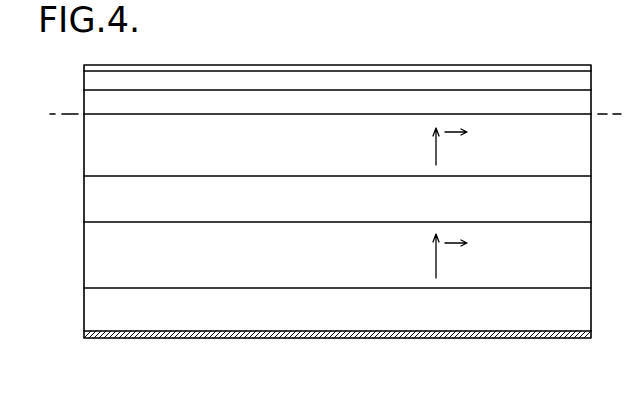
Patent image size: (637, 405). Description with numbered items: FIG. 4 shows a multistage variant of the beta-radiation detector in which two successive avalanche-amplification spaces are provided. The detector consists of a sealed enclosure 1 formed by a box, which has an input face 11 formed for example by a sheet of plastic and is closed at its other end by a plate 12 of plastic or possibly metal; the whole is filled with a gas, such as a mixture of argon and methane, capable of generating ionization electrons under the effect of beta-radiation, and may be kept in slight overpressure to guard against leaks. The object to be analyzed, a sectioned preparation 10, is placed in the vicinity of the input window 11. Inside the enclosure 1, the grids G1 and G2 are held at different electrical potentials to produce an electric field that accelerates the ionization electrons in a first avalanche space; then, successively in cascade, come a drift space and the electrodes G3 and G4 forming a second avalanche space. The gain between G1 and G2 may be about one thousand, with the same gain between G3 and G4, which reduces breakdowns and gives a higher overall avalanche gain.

The sealed enclosure 1 is at (84, 201).
The sectioned preparation 10 is at (477, 68).
The input face 11 is at (527, 90).
The plate 12 is at (480, 338).
The grid G1 is at (260, 113).
The grid G2 is at (342, 176).
The electrode G3 is at (202, 222).
The electrode G4 is at (240, 288).